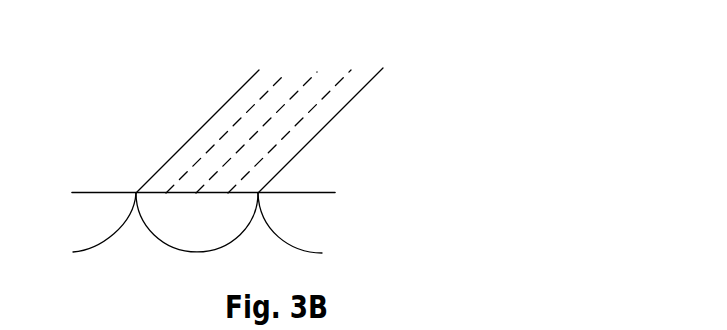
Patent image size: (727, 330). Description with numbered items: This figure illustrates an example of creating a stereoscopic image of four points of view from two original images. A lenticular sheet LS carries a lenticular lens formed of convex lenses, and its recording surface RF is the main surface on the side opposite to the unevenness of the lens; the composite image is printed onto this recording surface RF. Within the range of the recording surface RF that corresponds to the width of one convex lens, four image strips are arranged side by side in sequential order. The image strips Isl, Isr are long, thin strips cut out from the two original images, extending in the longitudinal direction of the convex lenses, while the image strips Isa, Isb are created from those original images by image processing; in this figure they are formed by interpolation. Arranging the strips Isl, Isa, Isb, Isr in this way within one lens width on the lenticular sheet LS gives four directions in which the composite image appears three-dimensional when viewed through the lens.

The recording surface RF is at (132, 145).
The image strip Isl is at (230, 104).
The image strip Isa is at (286, 83).
The image strip Isb is at (313, 90).
The image strip Isr is at (352, 90).
The lenticular sheet LS is at (342, 220).